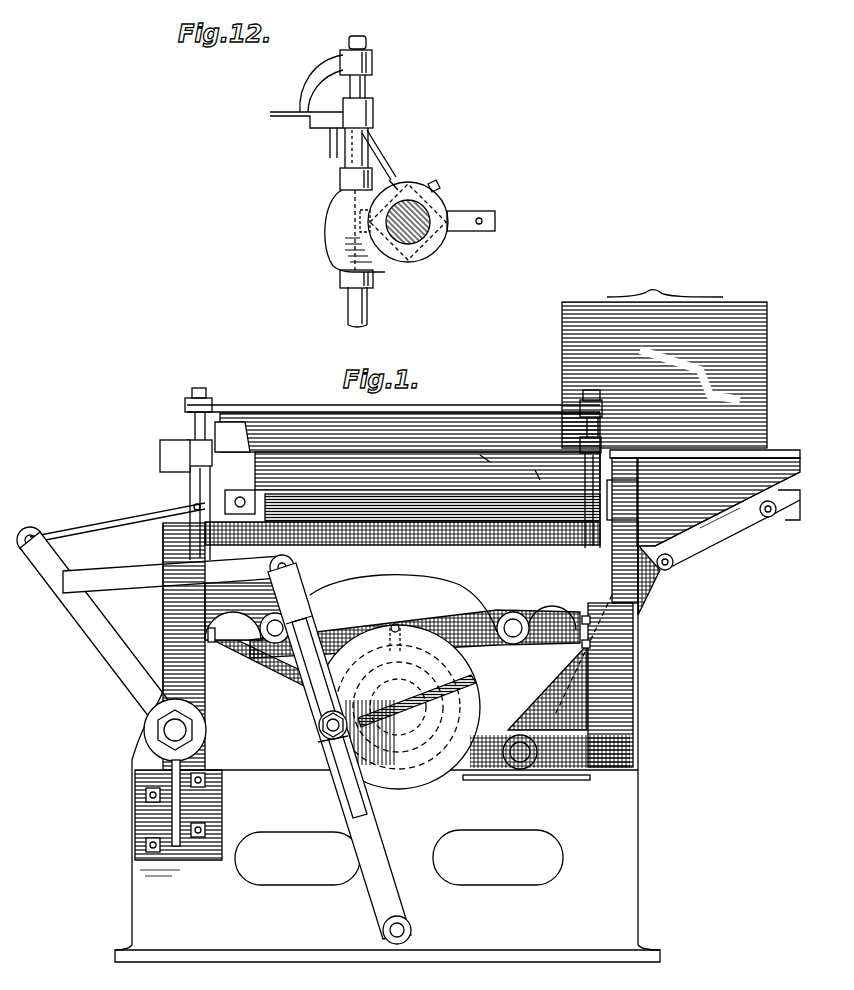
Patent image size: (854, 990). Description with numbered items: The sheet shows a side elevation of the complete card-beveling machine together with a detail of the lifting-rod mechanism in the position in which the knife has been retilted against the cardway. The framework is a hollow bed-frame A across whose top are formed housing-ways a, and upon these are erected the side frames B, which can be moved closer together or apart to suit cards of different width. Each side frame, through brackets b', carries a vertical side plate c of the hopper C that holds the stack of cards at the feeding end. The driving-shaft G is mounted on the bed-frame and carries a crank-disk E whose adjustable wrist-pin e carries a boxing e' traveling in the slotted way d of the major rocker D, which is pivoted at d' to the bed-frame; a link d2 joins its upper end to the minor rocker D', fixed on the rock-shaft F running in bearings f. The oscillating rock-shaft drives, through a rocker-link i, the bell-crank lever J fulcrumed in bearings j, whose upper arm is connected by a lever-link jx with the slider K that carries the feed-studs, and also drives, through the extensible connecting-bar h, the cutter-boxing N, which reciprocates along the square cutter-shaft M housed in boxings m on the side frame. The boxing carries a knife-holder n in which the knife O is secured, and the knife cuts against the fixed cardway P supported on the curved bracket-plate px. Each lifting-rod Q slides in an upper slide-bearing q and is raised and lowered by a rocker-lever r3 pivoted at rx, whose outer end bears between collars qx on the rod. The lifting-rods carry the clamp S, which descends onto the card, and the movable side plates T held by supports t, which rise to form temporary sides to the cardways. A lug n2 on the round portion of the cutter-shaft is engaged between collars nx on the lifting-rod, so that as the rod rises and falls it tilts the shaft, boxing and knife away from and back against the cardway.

In FIG. 1, the bed-frame A is at (387, 896).
In FIG. 1, the side frames B is at (651, 684).
In FIG. 1, the hopper C is at (664, 359).
In FIG. 1, the side plates of hopper c is at (690, 371).
In FIG. 1, the brackets b' is at (705, 498).
In FIG. 12, the clamp S is at (302, 83).
In FIG. 1, the clamp S is at (393, 428).
In FIG. 12, the cutter or knife O is at (382, 166).
In FIG. 1, the cutter or knife O is at (233, 445).
In FIG. 1, the rocker-link i is at (262, 680).
In FIG. 1, the movable side plates T is at (488, 467).
In FIG. 1, the supports t is at (539, 481).
In FIG. 12, the cutter-shaft M is at (418, 230).
In FIG. 1, the cutter-shaft M is at (432, 507).
In FIG. 12, the cutter-boxing N is at (446, 206).
In FIG. 1, the cutter-boxing N is at (240, 511).
In FIG. 12, the lifting-rod Q is at (373, 68).
In FIG. 1, the lifting-rod Q is at (195, 430).
In FIG. 1, the boxings m is at (398, 480).
In FIG. 1, the extensible connecting-bar h is at (106, 524).
In FIG. 1, the pivot H' is at (46, 560).
In FIG. 1, the minor rocker D' is at (102, 635).
In FIG. 1, the link d2 is at (178, 574).
In FIG. 1, the housing-ways a is at (628, 778).
In FIG. 1, the rocker-lever r3 is at (415, 625).
In FIG. 1, the pivot points rx is at (397, 616).
In FIG. 1, the collars qx is at (399, 660).
In FIG. 1, the crank-disk E is at (398, 706).
In FIG. 1, the driving-shaft G is at (458, 708).
In FIG. 1, the major rocker D is at (339, 751).
In FIG. 1, the slotted way d is at (323, 712).
In FIG. 1, the wrist-pin e is at (315, 723).
In FIG. 1, the boxing e' is at (317, 747).
In FIG. 1, the pivot d' is at (411, 923).
In FIG. 1, the rock-shaft F is at (175, 730).
In FIG. 1, the bearings f is at (158, 752).
In FIG. 1, the bearings j is at (530, 768).
In FIG. 1, the bell-crank lever J is at (647, 600).
In FIG. 1, the link L' is at (727, 521).
In FIG. 1, the slider K is at (780, 505).
In FIG. 1, the lever-link jx is at (720, 532).
In FIG. 12, the upper slide-bearing q is at (374, 112).
In FIG. 12, the cardway P is at (310, 121).
In FIG. 12, the curved bracket-plate px is at (325, 148).
In FIG. 12, the knife-holder n is at (401, 183).
In FIG. 12, the collar nx is at (353, 228).
In FIG. 12, the lug n2 is at (355, 231).